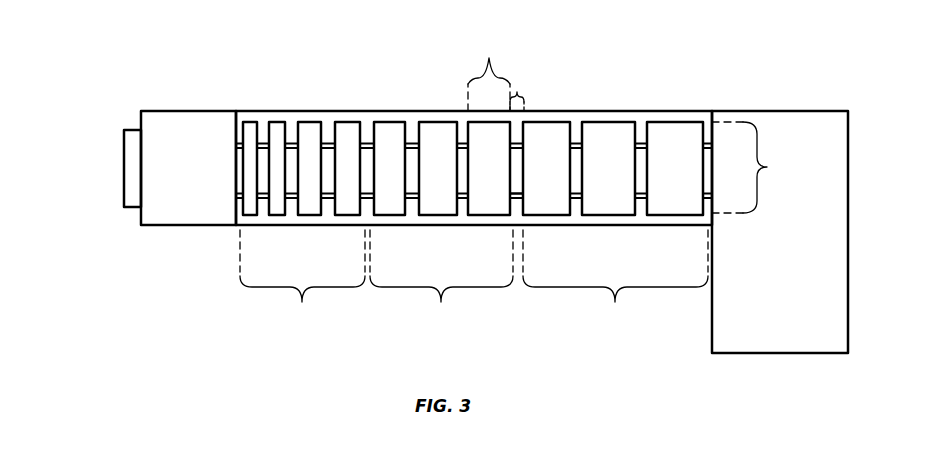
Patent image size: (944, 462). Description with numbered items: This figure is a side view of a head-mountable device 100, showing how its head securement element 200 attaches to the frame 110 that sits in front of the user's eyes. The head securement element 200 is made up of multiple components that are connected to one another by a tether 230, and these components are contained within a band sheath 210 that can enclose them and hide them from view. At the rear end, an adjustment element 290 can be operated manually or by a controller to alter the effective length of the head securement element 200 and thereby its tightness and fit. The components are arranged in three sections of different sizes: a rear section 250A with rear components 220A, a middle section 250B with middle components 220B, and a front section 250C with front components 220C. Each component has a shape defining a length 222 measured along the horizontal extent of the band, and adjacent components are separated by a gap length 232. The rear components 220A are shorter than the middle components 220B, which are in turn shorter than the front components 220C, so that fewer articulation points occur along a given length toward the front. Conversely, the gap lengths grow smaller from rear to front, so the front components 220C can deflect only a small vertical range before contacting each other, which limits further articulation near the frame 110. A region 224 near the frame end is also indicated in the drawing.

The head-mountable device 100 is at (128, 68).
The frame 110 is at (778, 111).
The head securement element 200 is at (185, 111).
The band sheath 210 is at (243, 111).
The rear components 220A is at (306, 122).
The middle components 220B is at (357, 122).
The front components 220C is at (588, 122).
The length 222 is at (489, 126).
The end region 224 is at (757, 167).
The tether 230 is at (518, 198).
The gap length 232 is at (517, 92).
The rear section 250A is at (302, 280).
The middle section 250B is at (441, 280).
The front section 250C is at (615, 280).
The adjustment element 290 is at (124, 170).